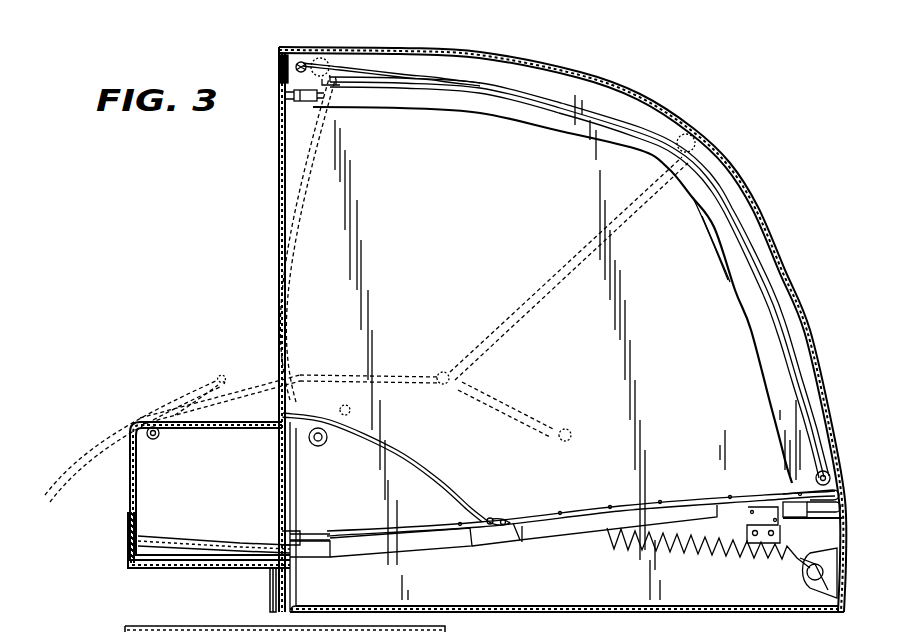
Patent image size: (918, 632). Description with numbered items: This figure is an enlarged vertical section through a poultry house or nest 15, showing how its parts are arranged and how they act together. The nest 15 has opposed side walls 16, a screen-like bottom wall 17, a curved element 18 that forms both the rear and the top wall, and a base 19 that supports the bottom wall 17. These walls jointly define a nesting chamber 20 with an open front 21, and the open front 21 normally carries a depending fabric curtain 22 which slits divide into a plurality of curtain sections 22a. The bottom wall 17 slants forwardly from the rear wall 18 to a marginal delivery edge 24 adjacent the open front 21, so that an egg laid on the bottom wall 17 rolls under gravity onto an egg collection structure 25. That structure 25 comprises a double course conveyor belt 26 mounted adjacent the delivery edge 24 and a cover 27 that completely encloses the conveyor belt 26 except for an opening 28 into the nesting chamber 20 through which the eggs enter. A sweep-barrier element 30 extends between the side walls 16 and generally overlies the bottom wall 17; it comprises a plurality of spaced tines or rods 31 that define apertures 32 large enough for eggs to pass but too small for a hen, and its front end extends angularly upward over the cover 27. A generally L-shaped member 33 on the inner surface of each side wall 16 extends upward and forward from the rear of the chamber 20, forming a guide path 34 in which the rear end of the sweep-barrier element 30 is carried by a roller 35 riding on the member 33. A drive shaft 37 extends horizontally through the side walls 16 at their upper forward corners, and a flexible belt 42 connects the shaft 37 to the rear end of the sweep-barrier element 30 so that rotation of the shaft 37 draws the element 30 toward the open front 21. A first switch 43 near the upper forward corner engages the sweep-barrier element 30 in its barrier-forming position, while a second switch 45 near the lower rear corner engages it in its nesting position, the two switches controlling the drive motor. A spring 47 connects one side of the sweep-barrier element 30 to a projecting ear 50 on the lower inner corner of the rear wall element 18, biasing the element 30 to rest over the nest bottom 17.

The poultry house or nest 15 is at (724, 127).
The side walls 16 is at (707, 268).
The bottom wall 17 is at (520, 538).
The curved element 18 is at (643, 102).
The base 19 is at (328, 555).
The nesting chamber 20 is at (694, 319).
The open front 21 is at (282, 256).
The fabric curtain 22 is at (282, 293).
The curtain section 22a is at (268, 233).
The marginal delivery edge 24 is at (284, 535).
The egg collection structure 25 is at (128, 538).
The double course conveyor belt 26 is at (162, 546).
The cover 27 is at (178, 415).
The opening 28 is at (296, 477).
The sweep-barrier element 30 is at (461, 500).
The tines or rods 31 is at (616, 505).
The apertures or passages 32 is at (245, 626).
The L-shaped member 33 is at (708, 226).
The guide means or path 34 is at (640, 132).
The roller 35 is at (838, 470).
The shaft 37 is at (290, 80).
The flexible belt 42 is at (394, 73).
The first switch 43 is at (300, 102).
The second switch 45 is at (766, 510).
The spring 47 is at (690, 558).
The projecting ear 50 is at (808, 574).